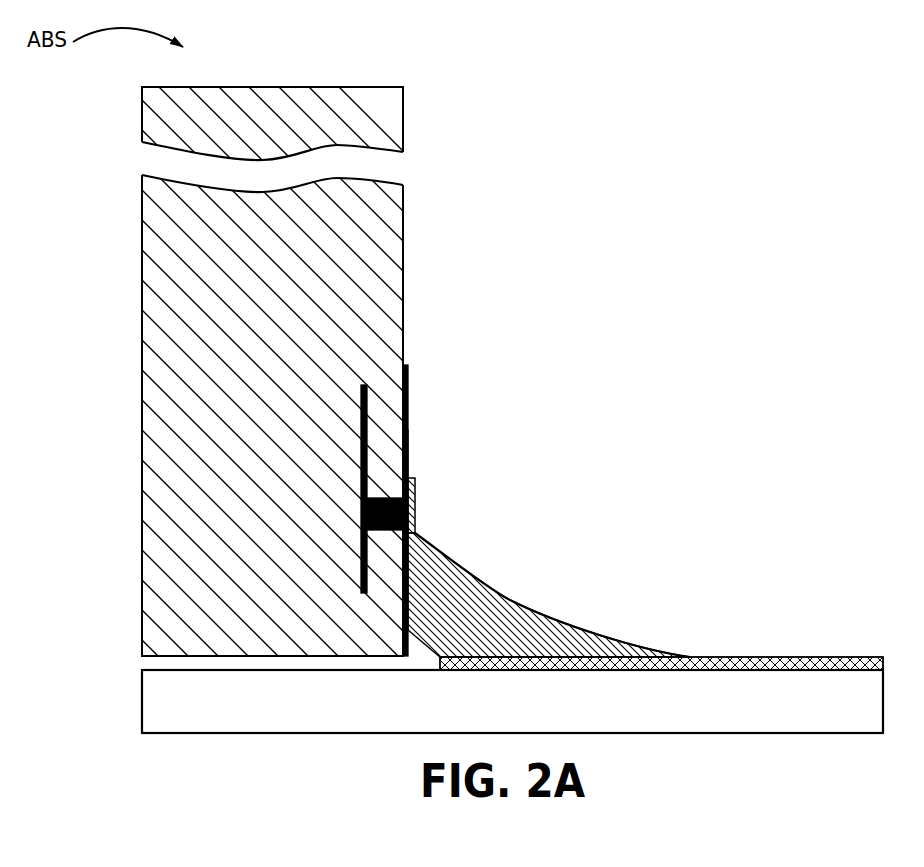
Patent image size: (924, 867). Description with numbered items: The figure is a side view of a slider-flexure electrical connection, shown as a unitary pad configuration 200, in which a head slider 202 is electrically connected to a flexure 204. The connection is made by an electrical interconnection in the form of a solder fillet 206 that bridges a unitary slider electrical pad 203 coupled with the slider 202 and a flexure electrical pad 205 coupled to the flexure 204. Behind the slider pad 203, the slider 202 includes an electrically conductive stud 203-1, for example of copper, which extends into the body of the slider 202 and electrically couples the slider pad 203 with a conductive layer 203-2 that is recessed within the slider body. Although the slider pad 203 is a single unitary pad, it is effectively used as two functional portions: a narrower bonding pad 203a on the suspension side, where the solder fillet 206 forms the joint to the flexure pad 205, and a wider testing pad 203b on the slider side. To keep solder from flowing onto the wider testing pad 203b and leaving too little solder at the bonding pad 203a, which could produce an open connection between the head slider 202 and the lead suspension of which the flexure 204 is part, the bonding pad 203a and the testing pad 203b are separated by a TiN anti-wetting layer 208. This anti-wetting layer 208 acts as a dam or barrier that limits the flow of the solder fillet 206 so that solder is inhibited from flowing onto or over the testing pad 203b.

The unitary pad configuration 200 is at (682, 475).
The head slider 202 is at (165, 547).
The unitary slider electrical pad 203 is at (412, 418).
The electrically conductive stud 203-1 is at (373, 497).
The conductive layer 203-2 is at (363, 430).
The bonding pad 203a is at (409, 578).
The testing pad 203b is at (408, 452).
The flexure 204 is at (152, 709).
The flexure electrical pad 205 is at (768, 657).
The solder fillet 206 is at (510, 597).
The TiN anti-wetting layer 208 is at (416, 507).